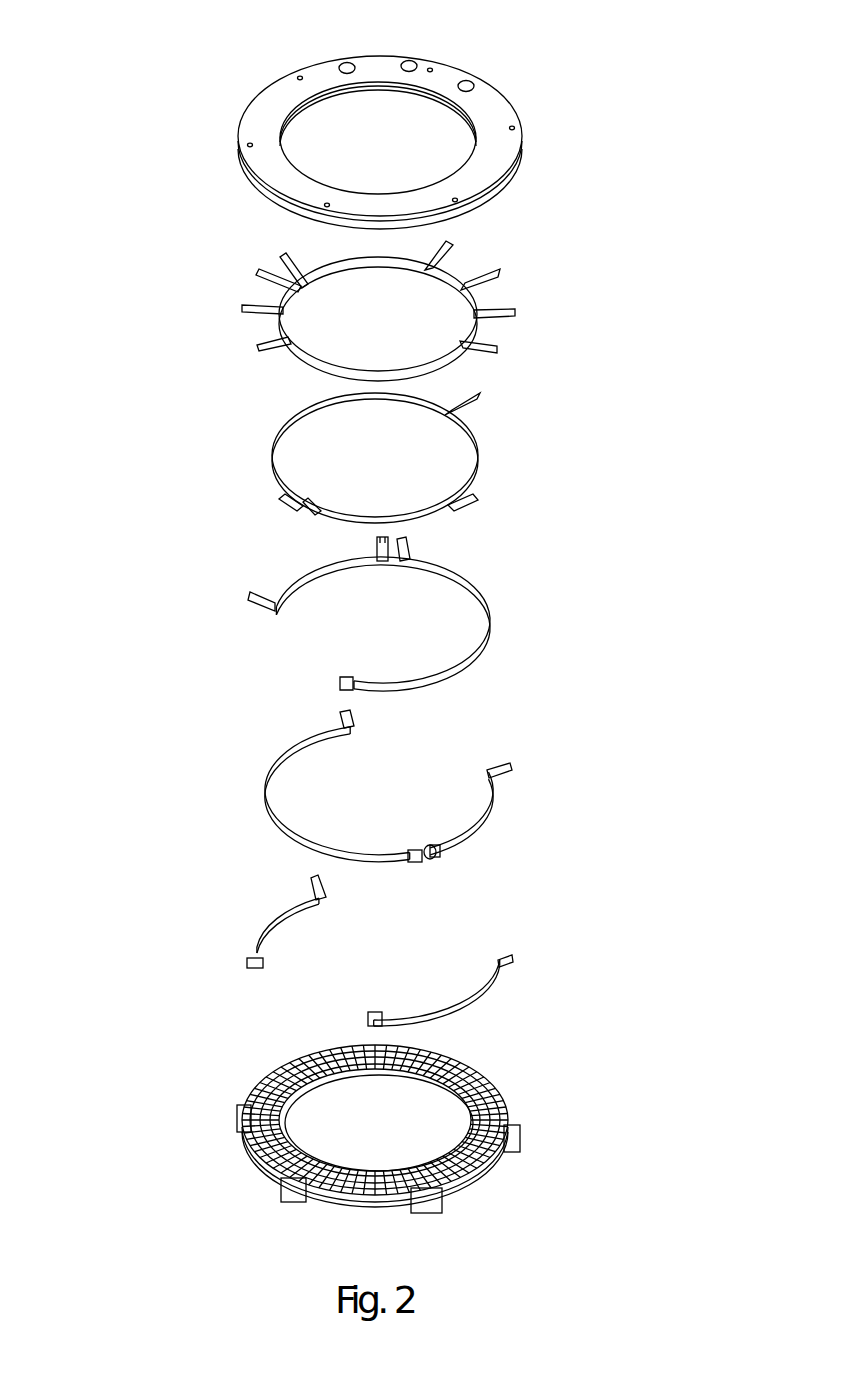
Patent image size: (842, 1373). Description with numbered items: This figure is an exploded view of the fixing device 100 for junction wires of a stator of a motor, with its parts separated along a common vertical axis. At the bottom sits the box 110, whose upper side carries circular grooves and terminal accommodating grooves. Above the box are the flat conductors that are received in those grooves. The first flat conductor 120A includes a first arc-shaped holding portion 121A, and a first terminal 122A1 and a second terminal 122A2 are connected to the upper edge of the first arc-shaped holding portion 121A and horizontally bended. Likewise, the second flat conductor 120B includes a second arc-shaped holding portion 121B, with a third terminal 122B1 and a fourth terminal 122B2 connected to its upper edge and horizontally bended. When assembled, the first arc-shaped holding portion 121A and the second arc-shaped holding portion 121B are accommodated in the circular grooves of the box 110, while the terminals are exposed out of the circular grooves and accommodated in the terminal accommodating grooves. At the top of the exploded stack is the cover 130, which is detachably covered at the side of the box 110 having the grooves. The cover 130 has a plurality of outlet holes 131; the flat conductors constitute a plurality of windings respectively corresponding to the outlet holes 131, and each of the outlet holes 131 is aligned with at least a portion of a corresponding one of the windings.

The fixing device 100 is at (123, 38).
The box 110 is at (256, 1145).
The first flat conductor 120A is at (256, 614).
The first arc-shaped holding portion 121A is at (315, 580).
The first terminal 122A1 is at (250, 596).
The second terminal 122A2 is at (375, 538).
The second flat conductor 120B is at (276, 311).
The second arc-shaped holding portion 121B is at (284, 328).
The third terminal 122B1 is at (260, 272).
The fourth terminal 122B2 is at (243, 315).
The cover 130 is at (493, 107).
The outlet holes 131 is at (482, 80).